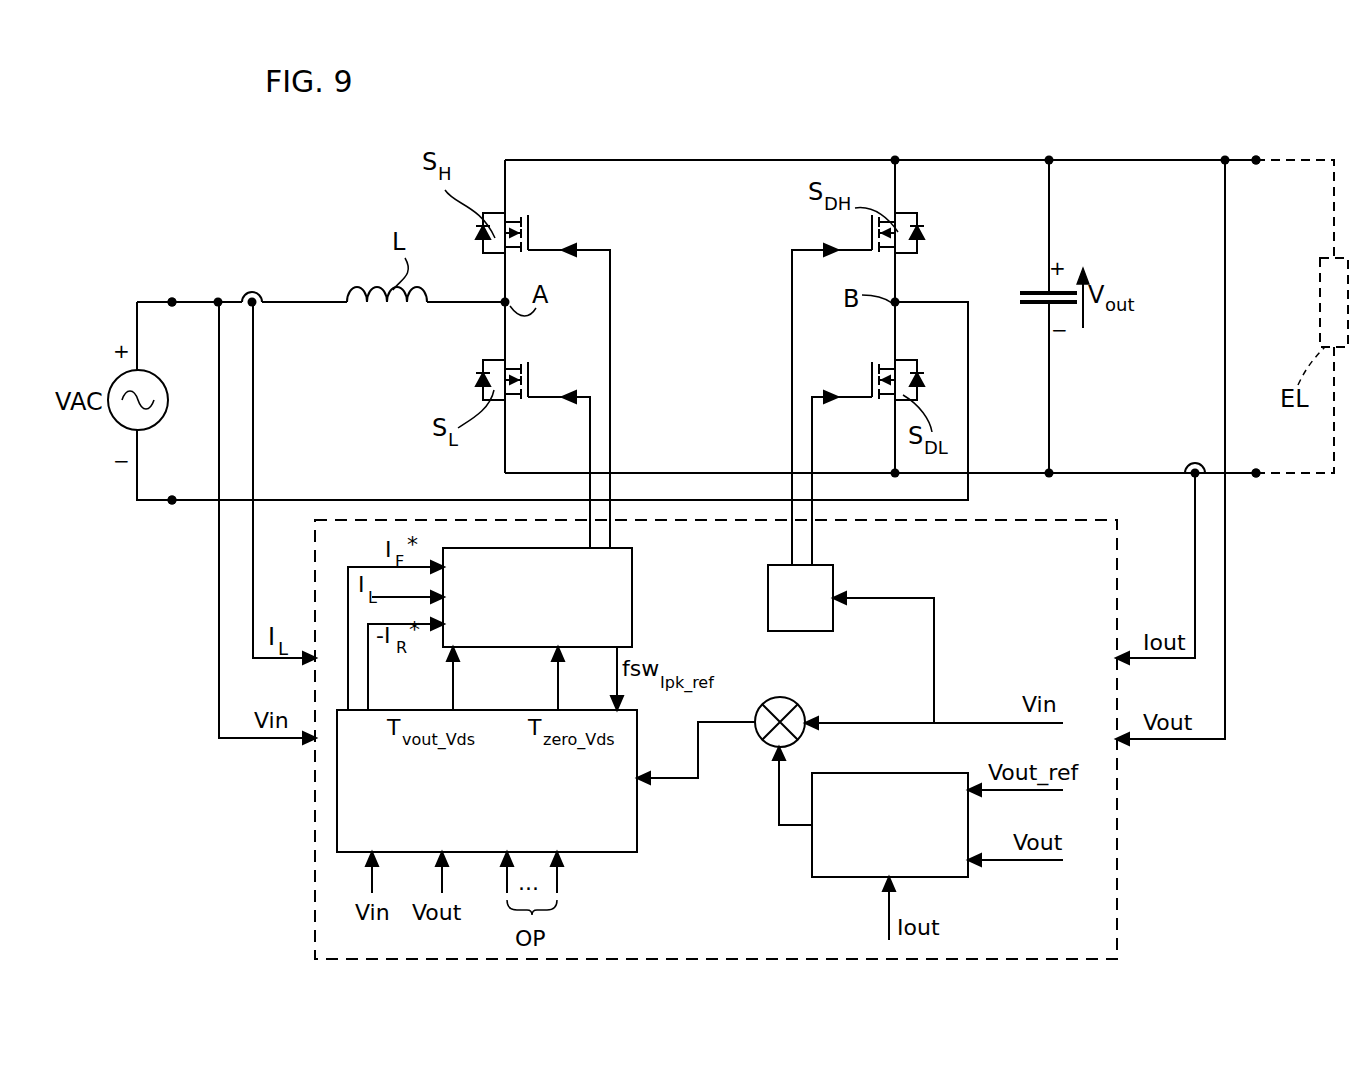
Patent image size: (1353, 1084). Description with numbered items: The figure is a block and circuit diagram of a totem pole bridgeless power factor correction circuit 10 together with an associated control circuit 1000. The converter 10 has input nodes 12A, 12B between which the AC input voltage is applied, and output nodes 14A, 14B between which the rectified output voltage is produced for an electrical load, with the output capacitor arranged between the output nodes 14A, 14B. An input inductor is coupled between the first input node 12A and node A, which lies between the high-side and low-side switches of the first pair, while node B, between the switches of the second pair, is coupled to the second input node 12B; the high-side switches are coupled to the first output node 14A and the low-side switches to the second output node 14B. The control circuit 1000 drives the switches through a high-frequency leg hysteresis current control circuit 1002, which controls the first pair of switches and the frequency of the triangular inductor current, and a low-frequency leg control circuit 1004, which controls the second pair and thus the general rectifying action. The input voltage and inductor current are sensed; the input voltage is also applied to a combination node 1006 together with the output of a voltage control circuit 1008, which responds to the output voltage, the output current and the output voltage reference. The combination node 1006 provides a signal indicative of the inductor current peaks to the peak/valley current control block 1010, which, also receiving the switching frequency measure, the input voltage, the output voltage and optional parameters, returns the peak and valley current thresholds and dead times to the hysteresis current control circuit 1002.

The totem pole bridgeless power factor correction circuit 10 is at (980, 124).
The first input node 12A is at (172, 300).
The second input node 12B is at (172, 505).
The first output node 14A is at (1258, 160).
The second output node 14B is at (1257, 478).
The control circuit 1000 is at (340, 928).
The high-frequency leg hysteresis current control circuit 1002 is at (632, 570).
The low-frequency leg control circuit 1004 is at (833, 580).
The combination node 1006 is at (765, 737).
The voltage control circuit 1008 is at (838, 878).
The peak/valley current control block 1010 is at (637, 803).